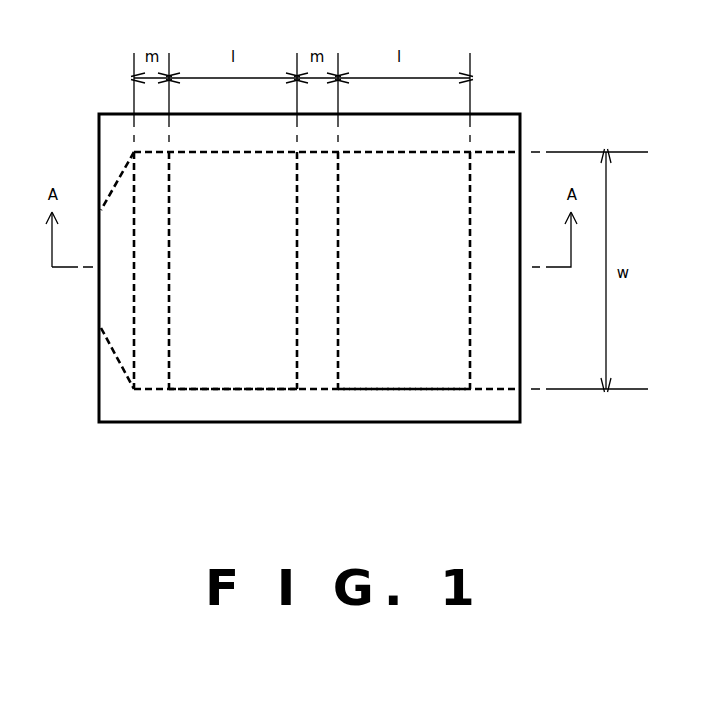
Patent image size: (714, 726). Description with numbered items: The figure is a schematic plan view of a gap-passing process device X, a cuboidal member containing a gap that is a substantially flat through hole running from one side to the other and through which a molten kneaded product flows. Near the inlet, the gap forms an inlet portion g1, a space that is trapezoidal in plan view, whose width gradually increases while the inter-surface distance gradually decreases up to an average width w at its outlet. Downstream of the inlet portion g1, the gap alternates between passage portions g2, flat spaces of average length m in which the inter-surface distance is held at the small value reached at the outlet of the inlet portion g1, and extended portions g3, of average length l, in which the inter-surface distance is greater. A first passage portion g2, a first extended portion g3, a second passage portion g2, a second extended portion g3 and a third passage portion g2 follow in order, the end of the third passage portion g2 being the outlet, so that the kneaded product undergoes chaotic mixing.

The gap-passing process device X is at (521, 68).
The inlet portion g1 is at (118, 355).
The passage portion g2 is at (153, 390).
The extended portion g3 is at (232, 390).